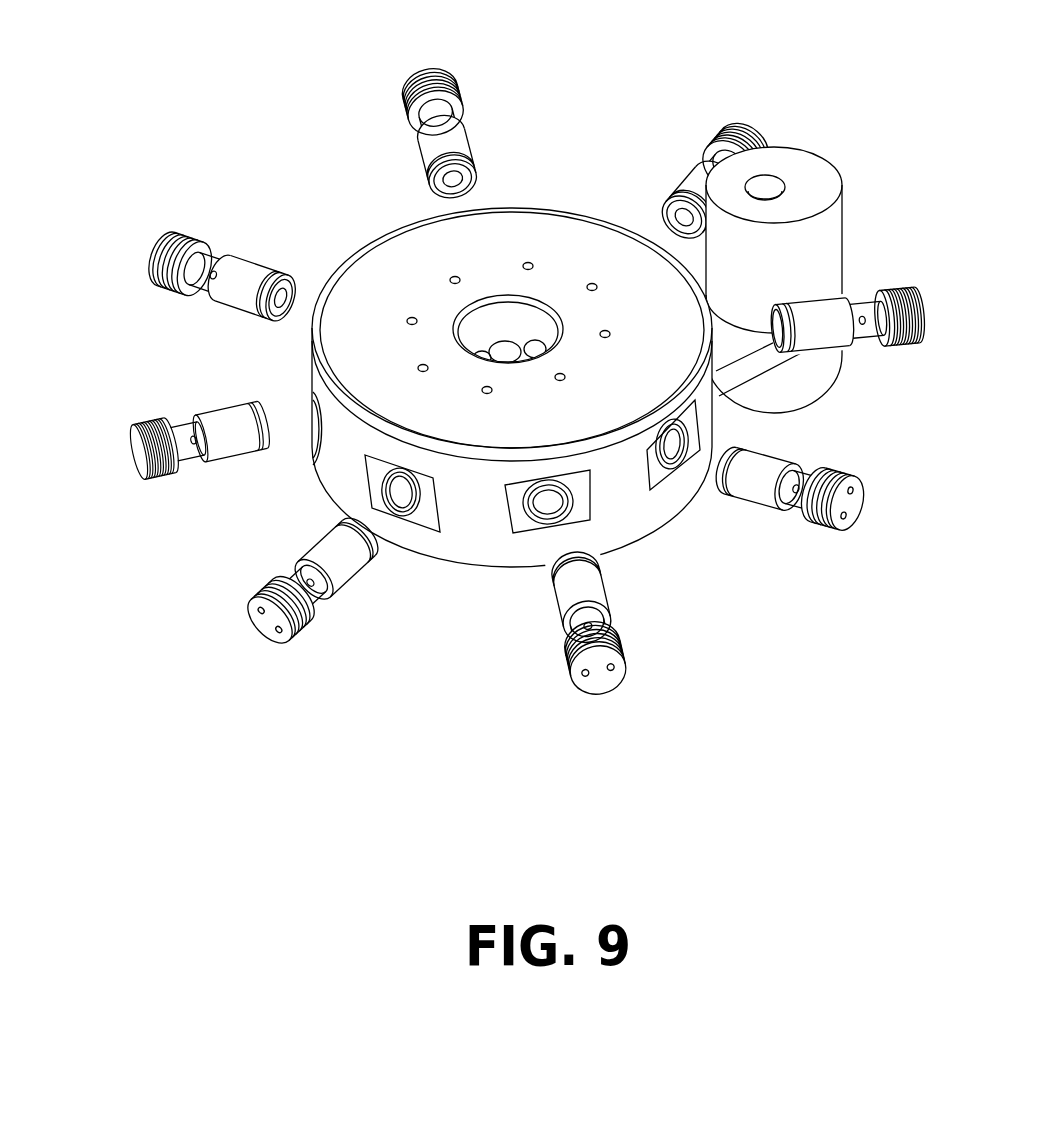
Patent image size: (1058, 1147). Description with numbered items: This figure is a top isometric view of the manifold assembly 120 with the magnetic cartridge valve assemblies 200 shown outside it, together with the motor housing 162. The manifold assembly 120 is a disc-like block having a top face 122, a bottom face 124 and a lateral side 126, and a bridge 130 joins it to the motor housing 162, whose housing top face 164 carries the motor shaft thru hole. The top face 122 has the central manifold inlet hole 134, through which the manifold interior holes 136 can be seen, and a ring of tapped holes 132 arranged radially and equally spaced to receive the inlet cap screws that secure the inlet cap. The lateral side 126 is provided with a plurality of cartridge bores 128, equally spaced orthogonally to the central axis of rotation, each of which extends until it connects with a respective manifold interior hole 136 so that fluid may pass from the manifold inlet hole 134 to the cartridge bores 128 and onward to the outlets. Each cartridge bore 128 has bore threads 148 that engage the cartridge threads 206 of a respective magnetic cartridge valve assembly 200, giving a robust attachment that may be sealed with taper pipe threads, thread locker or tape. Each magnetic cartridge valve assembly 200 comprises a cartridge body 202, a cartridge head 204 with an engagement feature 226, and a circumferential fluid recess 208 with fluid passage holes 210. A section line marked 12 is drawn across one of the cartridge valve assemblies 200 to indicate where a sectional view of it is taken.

The section line 12 is at (128, 455).
The manifold assembly 120 is at (529, 385).
The top face 122 is at (489, 234).
The bottom face 124 is at (462, 565).
The lateral side 126 is at (557, 493).
The cartridge bores 128 is at (567, 513).
The bridge 130 is at (773, 370).
The tapped holes 132 is at (592, 287).
The manifold inlet hole 134 is at (449, 192).
The manifold interior holes 136 is at (500, 353).
The bore threads 148 is at (682, 455).
The motor housing 162 is at (837, 259).
The housing top face 164 is at (803, 175).
The magnetic cartridge valve assemblies 200 is at (147, 245).
The cartridge body 202 is at (303, 563).
The cartridge head 204 is at (263, 617).
The cartridge threads 206 is at (263, 593).
The circumferential fluid recess 208 is at (287, 578).
The fluid passage holes 210 is at (315, 583).
The engagement feature 226 is at (277, 635).